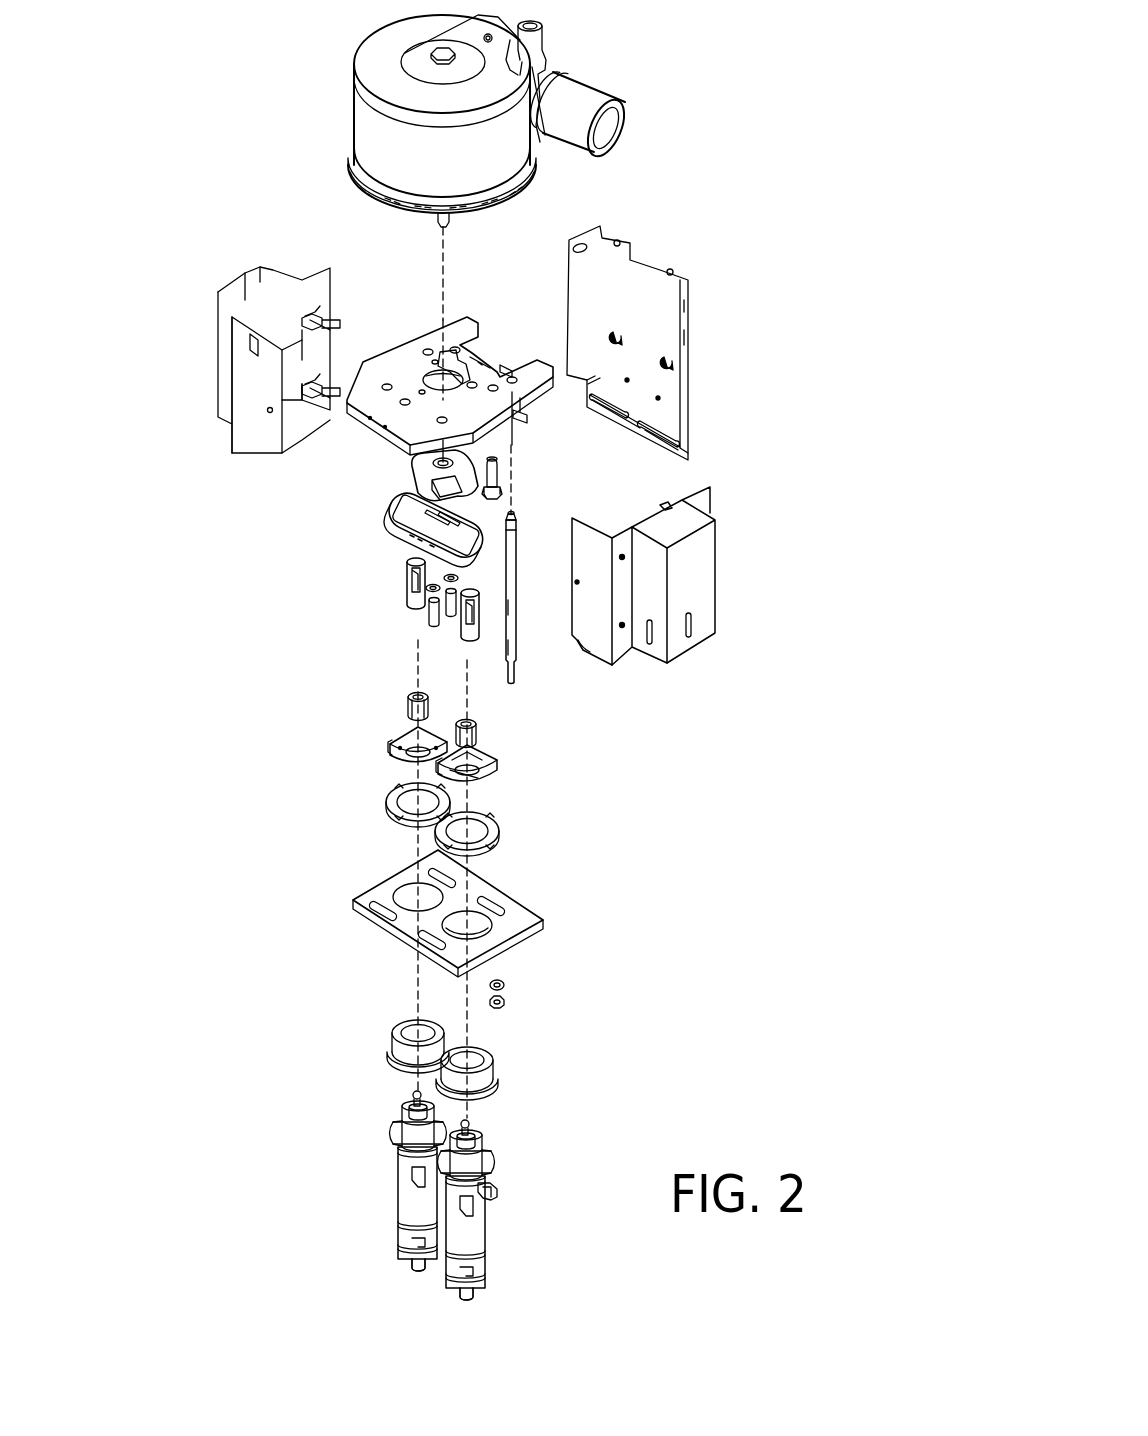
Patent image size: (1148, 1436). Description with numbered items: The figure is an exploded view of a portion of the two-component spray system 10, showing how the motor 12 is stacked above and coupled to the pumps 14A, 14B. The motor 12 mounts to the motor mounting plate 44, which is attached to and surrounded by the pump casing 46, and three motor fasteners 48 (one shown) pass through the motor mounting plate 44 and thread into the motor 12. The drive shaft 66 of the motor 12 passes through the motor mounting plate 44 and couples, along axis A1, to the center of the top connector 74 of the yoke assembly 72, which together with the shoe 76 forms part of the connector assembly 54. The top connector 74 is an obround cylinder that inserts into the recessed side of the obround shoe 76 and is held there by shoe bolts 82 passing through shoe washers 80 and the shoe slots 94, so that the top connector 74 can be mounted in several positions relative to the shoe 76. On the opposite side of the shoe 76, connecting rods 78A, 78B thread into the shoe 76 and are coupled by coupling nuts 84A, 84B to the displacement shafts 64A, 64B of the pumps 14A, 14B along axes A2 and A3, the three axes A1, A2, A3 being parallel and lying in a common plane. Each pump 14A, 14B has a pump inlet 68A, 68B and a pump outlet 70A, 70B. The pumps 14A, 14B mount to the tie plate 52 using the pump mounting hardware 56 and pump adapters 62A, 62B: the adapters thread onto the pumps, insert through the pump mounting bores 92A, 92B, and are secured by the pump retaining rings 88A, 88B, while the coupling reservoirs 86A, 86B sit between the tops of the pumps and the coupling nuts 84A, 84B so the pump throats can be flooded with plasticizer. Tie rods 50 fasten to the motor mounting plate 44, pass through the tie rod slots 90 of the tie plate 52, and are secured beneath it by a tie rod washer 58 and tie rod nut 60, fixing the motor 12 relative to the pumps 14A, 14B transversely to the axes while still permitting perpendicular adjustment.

The spray system 10 is at (748, 102).
The motor 12 is at (350, 118).
The pump 14A is at (410, 1206).
The pump 14B is at (472, 1222).
The motor mounting plate 44 is at (405, 352).
The pump casing 46 is at (252, 290).
The motor fasteners 48 is at (504, 476).
The tie rods 50 is at (516, 636).
The tie plate 52 is at (538, 912).
The connector assembly 54 is at (268, 555).
The pump mounting hardware 56 is at (265, 738).
The tie rod washer 58 is at (506, 983).
The tie rod nut 60 is at (506, 1003).
The pump adapter 62A is at (398, 1035).
The pump adapter 62B is at (495, 1068).
The displacement shaft 64A is at (412, 1096).
The displacement shaft 64B is at (470, 1124).
The drive shaft 66 is at (450, 212).
The pump inlet 68A is at (418, 1270).
The pump inlet 68B is at (472, 1297).
The pump outlet 70A is at (394, 1138).
The pump outlet 70B is at (498, 1190).
The yoke assembly 72 is at (293, 453).
The top connector 74 is at (412, 478).
The shoe 76 is at (392, 528).
The connecting rod 78A is at (405, 572).
The connecting rod 78B is at (480, 598).
The shoe washers 80 is at (425, 588).
The shoe bolts 82 is at (428, 612).
The coupling nut 84A is at (410, 700).
The coupling nut 84B is at (480, 728).
The coupling reservoir 86A is at (392, 753).
The coupling reservoir 86B is at (492, 762).
The pump retaining ring 88A is at (390, 805).
The pump retaining ring 88B is at (494, 830).
The tie rod slots 90 is at (500, 898).
The pump mounting bore 92A is at (412, 893).
The pump mounting bore 92B is at (478, 932).
The shoe slots 94 is at (452, 522).
The axis A1 is at (450, 284).
The axis A2 is at (412, 646).
The axis A3 is at (466, 672).